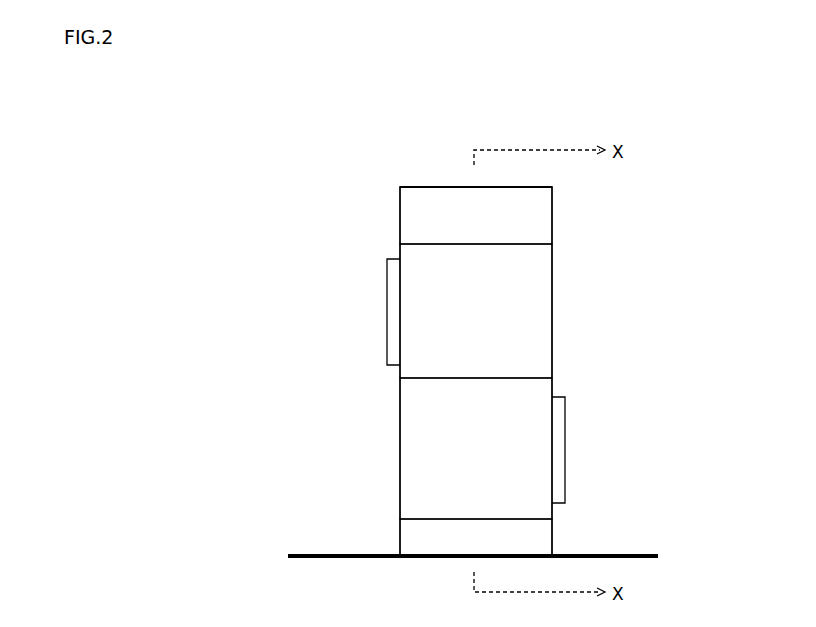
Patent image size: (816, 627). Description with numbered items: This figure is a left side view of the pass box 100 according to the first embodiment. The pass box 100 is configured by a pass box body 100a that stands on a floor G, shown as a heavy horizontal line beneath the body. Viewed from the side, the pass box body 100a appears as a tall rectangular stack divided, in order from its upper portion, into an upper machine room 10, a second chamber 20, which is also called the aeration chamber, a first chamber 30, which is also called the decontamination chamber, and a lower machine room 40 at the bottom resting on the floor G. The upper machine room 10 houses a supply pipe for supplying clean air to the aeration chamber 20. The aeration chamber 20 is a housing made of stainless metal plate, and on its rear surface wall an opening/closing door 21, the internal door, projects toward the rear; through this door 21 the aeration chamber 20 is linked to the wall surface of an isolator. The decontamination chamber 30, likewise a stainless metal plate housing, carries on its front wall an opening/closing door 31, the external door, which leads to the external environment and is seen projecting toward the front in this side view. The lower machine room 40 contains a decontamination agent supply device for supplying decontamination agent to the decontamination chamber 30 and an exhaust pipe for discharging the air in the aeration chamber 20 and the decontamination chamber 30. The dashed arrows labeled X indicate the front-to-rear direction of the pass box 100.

The pass box 100 is at (440, 135).
The pass box body 100a is at (402, 186).
The upper machine room 10 is at (553, 223).
The second chamber 20 is at (553, 302).
The opening/closing door 21 is at (385, 308).
The first chamber 30 is at (398, 448).
The opening/closing door 31 is at (567, 445).
The lower machine room 40 is at (398, 537).
The floor G is at (330, 552).